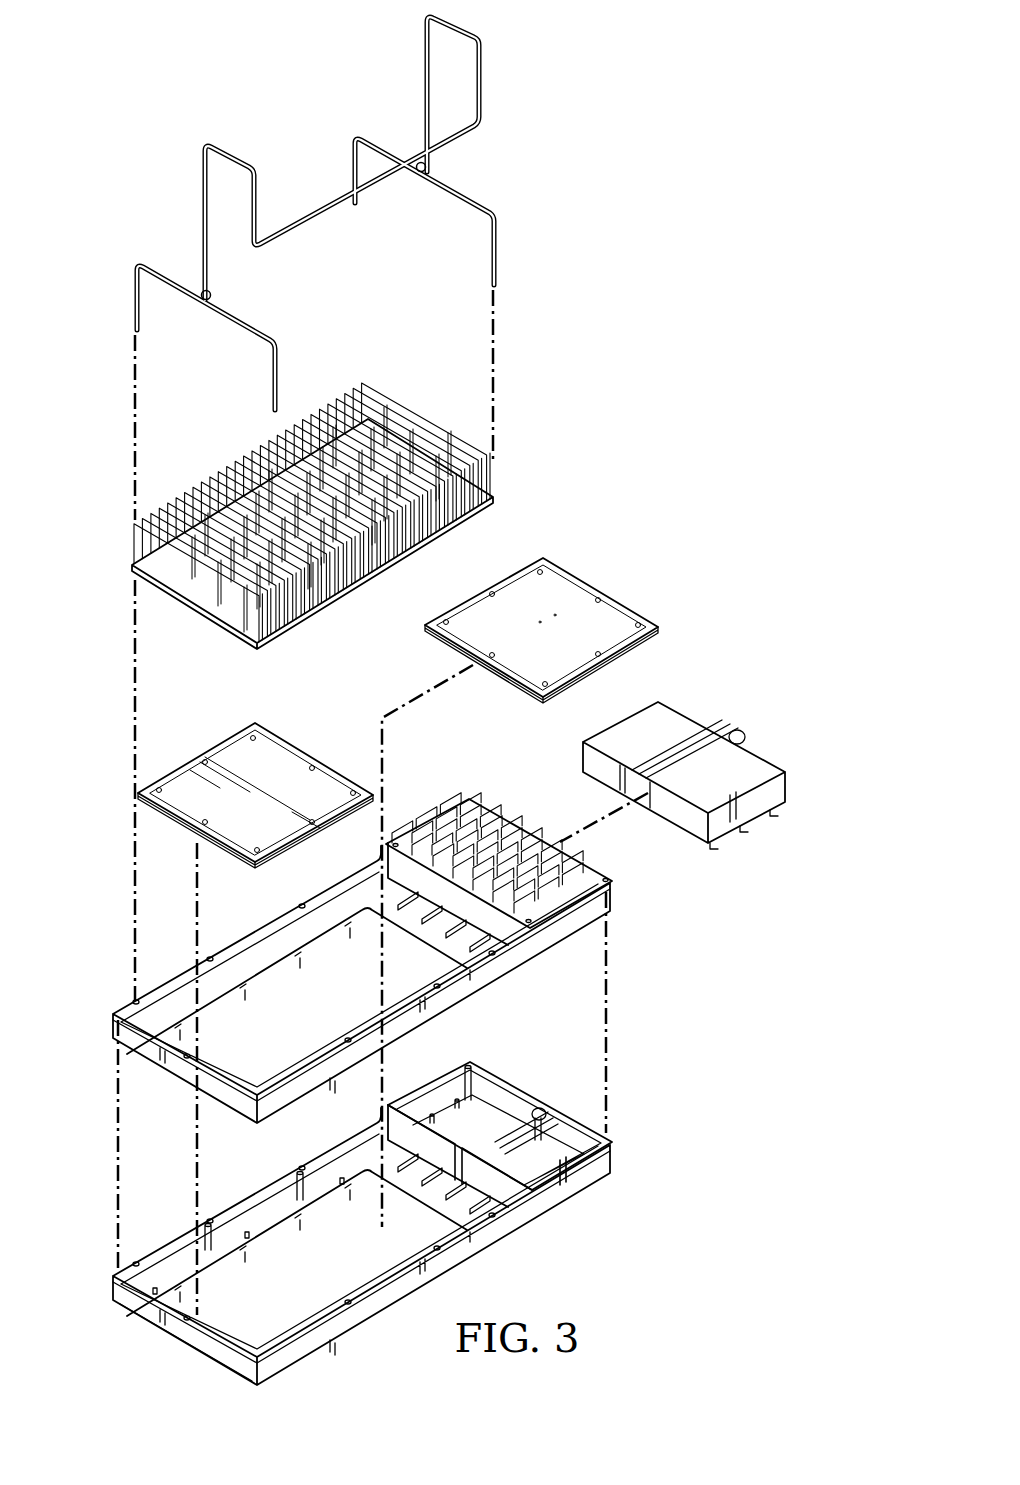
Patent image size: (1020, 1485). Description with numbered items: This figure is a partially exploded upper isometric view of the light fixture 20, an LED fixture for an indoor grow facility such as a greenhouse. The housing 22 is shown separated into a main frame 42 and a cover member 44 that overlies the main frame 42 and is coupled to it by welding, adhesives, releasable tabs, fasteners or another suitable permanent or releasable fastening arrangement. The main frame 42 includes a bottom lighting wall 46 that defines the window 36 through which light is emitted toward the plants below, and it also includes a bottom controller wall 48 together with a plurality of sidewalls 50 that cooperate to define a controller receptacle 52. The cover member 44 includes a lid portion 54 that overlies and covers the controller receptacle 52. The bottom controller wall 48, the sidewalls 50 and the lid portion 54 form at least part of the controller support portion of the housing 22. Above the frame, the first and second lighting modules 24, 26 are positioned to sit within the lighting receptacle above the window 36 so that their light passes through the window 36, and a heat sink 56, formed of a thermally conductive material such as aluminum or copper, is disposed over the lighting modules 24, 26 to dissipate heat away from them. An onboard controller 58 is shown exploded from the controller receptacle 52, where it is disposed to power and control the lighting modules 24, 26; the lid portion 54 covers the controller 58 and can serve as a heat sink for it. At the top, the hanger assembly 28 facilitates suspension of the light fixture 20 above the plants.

The light fixture 20 is at (645, 128).
The housing 22 is at (503, 804).
The first lighting module 24 is at (603, 562).
The second lighting module 26 is at (318, 742).
The hanger assembly 28 is at (176, 236).
The window 36 is at (285, 1222).
The main frame 42 is at (581, 1208).
The cover member 44 is at (256, 918).
The bottom lighting wall 46 is at (143, 1323).
The bottom controller wall 48 is at (493, 1125).
The sidewalls 50 is at (423, 1095).
The controller receptacle 52 is at (468, 1062).
The lid portion 54 is at (606, 876).
The heat sink 56 is at (249, 440).
The onboard controller 58 is at (690, 708).